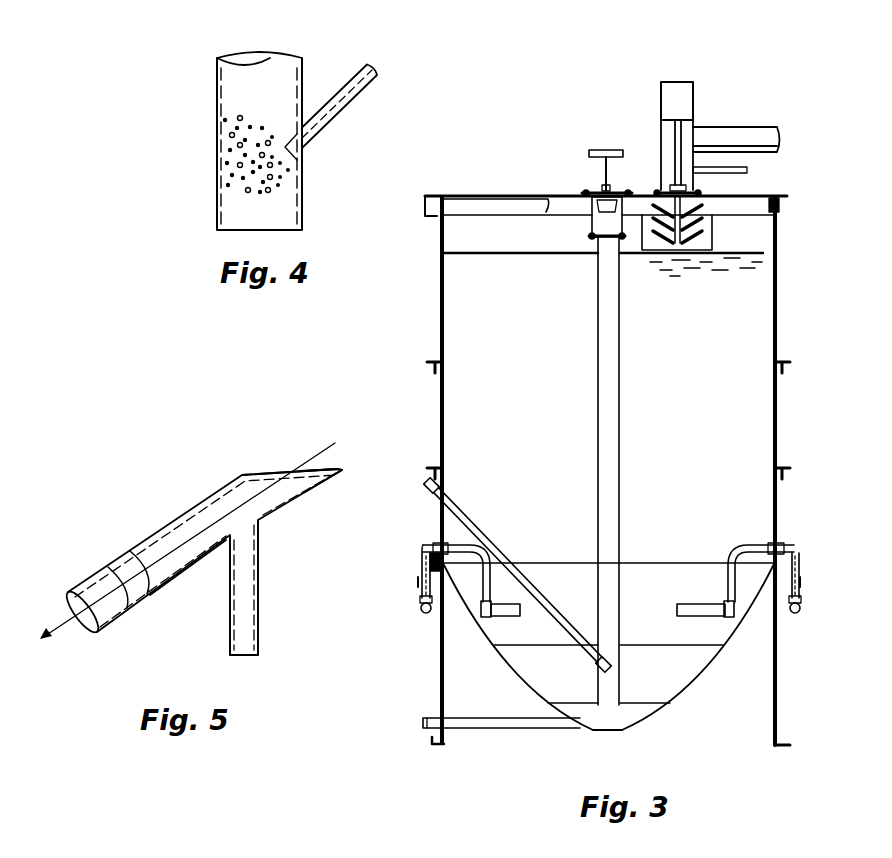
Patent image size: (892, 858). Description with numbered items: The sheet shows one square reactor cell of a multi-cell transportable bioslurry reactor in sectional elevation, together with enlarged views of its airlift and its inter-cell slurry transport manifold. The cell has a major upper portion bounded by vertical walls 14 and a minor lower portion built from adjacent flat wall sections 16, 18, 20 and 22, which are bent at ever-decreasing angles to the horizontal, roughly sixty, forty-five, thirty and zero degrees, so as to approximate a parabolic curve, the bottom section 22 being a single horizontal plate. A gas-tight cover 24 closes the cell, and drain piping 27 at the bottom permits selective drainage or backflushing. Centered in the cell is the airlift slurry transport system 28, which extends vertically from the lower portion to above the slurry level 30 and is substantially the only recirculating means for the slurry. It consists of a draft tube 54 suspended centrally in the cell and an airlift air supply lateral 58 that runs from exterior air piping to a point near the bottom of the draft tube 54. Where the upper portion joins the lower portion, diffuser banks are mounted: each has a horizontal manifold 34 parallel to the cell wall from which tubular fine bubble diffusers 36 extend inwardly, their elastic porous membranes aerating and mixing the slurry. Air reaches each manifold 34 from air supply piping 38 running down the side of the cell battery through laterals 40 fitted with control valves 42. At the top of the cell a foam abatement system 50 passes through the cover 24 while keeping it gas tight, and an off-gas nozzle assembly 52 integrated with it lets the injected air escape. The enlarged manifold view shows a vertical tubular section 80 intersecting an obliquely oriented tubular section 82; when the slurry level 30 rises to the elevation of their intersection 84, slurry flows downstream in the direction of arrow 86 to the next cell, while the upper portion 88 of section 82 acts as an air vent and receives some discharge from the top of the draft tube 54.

In FIG. 3, the vertical walls 14 is at (777, 302).
In FIG. 3, the flat wall section 16 is at (752, 595).
In FIG. 3, the flat wall section 18 is at (707, 672).
In FIG. 3, the flat wall section 20 is at (665, 705).
In FIG. 3, the flat wall section 22 is at (620, 732).
In FIG. 3, the gas-tight cover 24 is at (745, 195).
In FIG. 3, the drain piping 27 is at (480, 728).
In FIG. 3, the airlift slurry transport system 28 is at (632, 352).
In FIG. 3, the slurry level 30 is at (733, 252).
In FIG. 3, the manifold 34 is at (485, 618).
In FIG. 3, the tubular fine bubble diffusers 36 is at (680, 602).
In FIG. 3, the air supply piping 38 is at (427, 614).
In FIG. 3, the laterals 40 is at (455, 545).
In FIG. 3, the control valve 42 is at (416, 583).
In FIG. 5, the control valve 42 is at (272, 530).
In FIG. 3, the foam abatement system 50 is at (708, 88).
In FIG. 3, the off-gas nozzle assembly 52 is at (758, 127).
In FIG. 4, the draft tube 54 is at (310, 78).
In FIG. 3, the airlift air supply lateral 58 is at (470, 513).
In FIG. 4, the airlift air supply lateral 58 is at (330, 116).
In FIG. 5, the vertical tubular section 80 is at (260, 583).
In FIG. 5, the obliquely-oriented tubular section 82 is at (183, 580).
In FIG. 5, the intersection 84 is at (233, 500).
In FIG. 5, the arrow 86 is at (105, 593).
In FIG. 5, the upper portion 88 is at (295, 483).